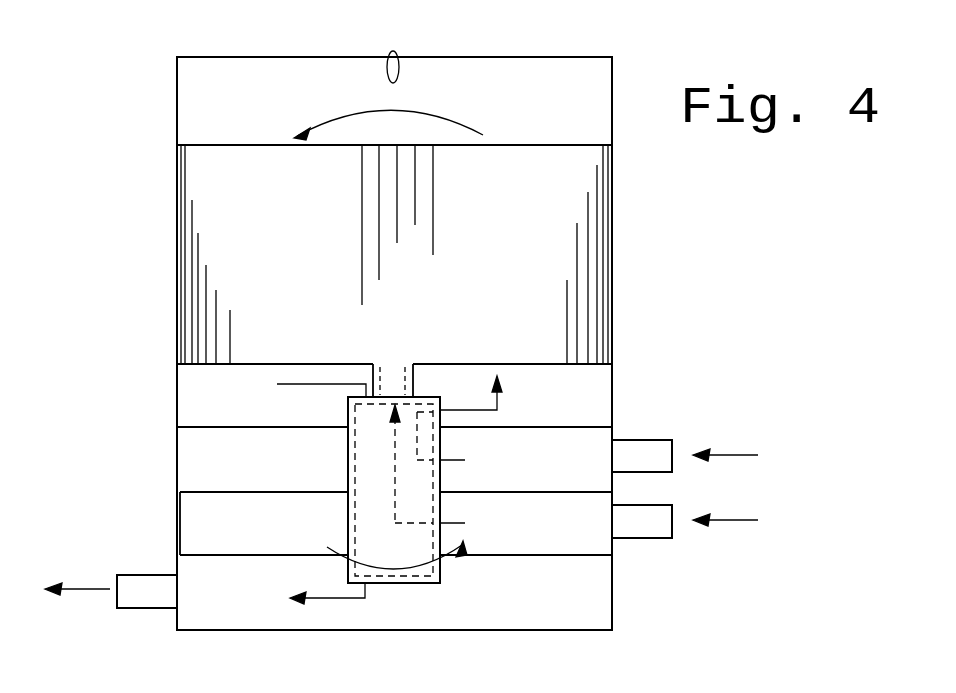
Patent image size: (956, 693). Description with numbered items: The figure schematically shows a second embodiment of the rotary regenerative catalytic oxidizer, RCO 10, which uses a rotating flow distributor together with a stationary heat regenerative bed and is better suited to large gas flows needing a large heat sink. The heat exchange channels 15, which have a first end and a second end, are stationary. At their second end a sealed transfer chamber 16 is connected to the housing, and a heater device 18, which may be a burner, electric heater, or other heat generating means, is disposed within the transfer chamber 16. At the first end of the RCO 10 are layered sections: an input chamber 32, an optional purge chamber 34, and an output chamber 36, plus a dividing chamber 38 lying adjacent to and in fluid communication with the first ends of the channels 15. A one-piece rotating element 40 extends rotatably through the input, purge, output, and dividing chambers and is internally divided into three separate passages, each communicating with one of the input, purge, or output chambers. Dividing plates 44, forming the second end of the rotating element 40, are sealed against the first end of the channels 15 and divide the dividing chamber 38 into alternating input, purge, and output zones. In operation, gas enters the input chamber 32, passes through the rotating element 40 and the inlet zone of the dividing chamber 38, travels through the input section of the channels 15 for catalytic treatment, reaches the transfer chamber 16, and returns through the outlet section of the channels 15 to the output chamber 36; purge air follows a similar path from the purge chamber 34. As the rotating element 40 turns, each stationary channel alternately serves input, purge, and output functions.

The RCO 10 is at (128, 145).
The heat exchange channels 15 is at (595, 282).
The transfer chamber 16 is at (560, 80).
The heater device 18 is at (399, 72).
The input chamber 32 is at (593, 455).
The purge chamber 34 is at (565, 543).
The output chamber 36 is at (222, 608).
The dividing chamber 38 is at (190, 400).
The rotating element 40 is at (372, 467).
The dividing plates 44 is at (397, 362).